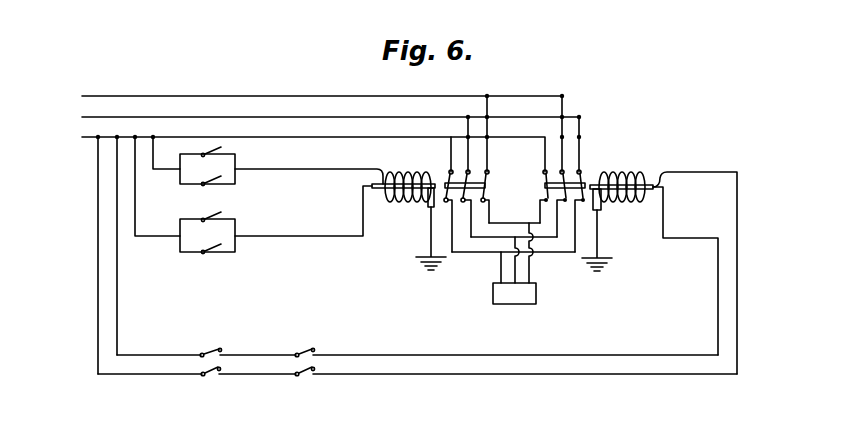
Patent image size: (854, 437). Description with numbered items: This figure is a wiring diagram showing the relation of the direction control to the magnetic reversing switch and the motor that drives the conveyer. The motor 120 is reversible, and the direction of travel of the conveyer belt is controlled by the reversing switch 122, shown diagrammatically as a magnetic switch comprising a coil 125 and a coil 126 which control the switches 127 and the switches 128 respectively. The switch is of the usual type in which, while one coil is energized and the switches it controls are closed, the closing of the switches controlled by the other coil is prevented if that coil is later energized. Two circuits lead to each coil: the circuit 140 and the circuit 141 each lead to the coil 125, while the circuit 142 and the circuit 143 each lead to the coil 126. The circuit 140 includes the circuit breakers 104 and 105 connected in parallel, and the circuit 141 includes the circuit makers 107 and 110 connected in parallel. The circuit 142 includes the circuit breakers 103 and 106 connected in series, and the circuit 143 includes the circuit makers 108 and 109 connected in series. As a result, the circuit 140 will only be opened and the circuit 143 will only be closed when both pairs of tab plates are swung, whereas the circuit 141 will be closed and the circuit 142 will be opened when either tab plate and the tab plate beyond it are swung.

The circuit breaker 103 is at (222, 350).
The circuit breaker 104 is at (222, 150).
The circuit breaker 105 is at (219, 178).
The circuit breaker 106 is at (315, 350).
The circuit maker 107 is at (222, 214).
The circuit maker 108 is at (218, 376).
The circuit maker 109 is at (310, 376).
The circuit maker 110 is at (219, 246).
The motor 120 is at (514, 293).
The reversing switch 122 is at (546, 185).
The coil 125 is at (389, 196).
The coil 126 is at (624, 183).
The switches 127 is at (465, 170).
The switches 128 is at (584, 176).
The circuit 140 is at (284, 168).
The circuit 141 is at (284, 237).
The circuit 142 is at (481, 338).
The circuit 143 is at (417, 377).